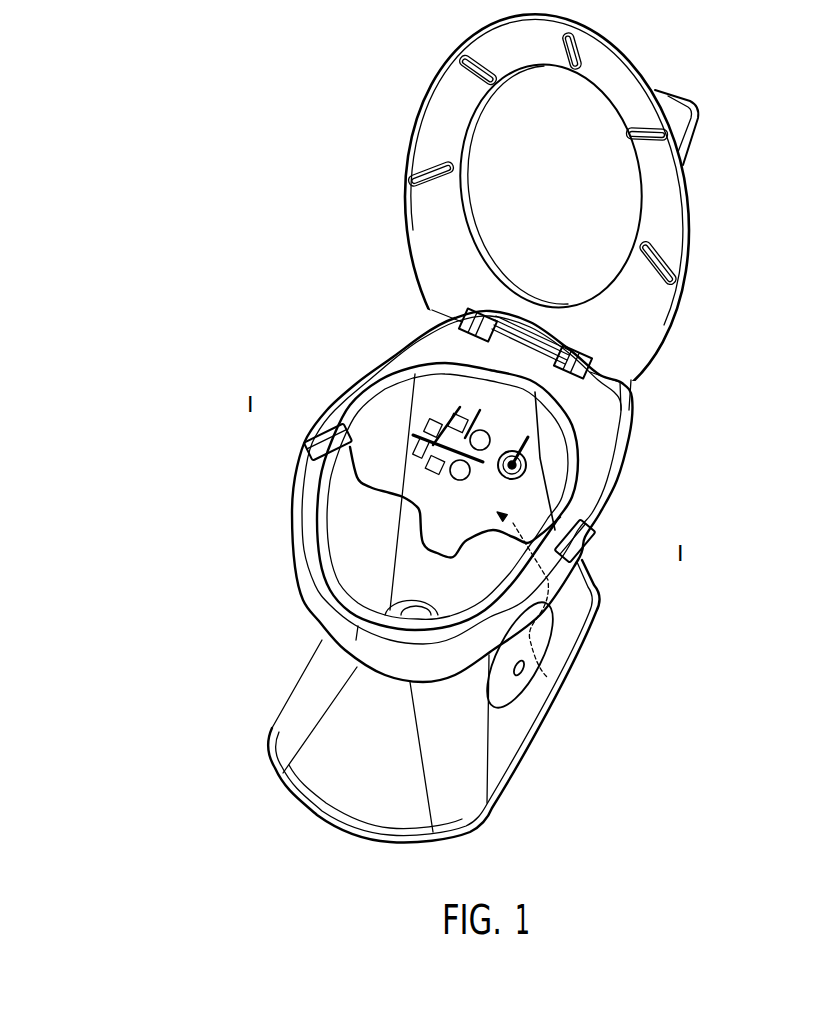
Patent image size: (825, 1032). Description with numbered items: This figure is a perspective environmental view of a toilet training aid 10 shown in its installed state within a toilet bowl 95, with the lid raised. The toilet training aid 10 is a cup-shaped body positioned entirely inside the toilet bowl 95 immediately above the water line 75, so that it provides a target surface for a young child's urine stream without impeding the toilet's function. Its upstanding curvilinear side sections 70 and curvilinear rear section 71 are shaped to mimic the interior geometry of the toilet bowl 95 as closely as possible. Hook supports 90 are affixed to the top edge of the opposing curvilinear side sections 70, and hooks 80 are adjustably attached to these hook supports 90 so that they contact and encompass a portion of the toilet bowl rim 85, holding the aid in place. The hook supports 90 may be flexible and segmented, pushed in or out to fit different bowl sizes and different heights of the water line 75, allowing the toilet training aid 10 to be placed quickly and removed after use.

The toilet training aid 10 is at (538, 660).
The curvilinear side section 70 is at (410, 405).
The curvilinear rear section 71 is at (540, 420).
The water line 75 is at (418, 567).
The hook 80 is at (322, 437).
The toilet bowl rim 85 is at (320, 527).
The hook support 90 is at (348, 467).
The toilet bowl 95 is at (697, 128).